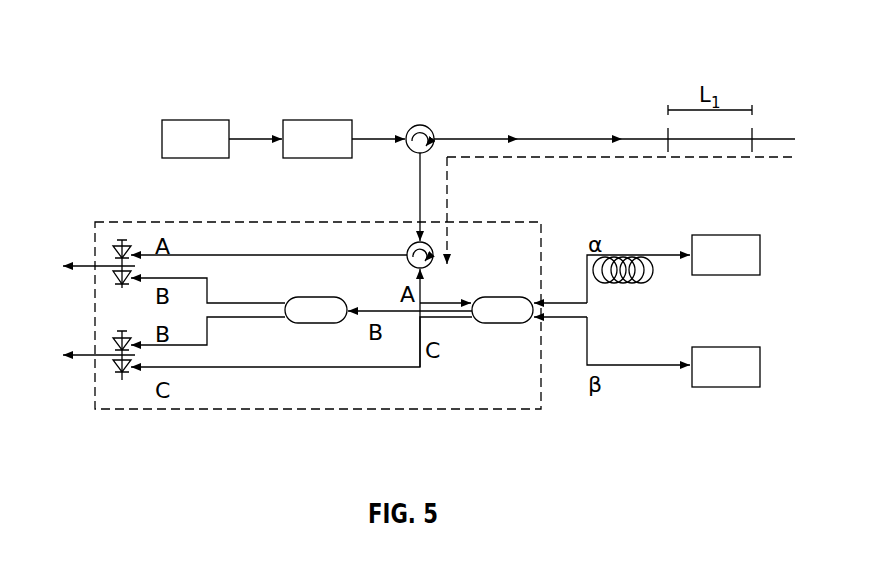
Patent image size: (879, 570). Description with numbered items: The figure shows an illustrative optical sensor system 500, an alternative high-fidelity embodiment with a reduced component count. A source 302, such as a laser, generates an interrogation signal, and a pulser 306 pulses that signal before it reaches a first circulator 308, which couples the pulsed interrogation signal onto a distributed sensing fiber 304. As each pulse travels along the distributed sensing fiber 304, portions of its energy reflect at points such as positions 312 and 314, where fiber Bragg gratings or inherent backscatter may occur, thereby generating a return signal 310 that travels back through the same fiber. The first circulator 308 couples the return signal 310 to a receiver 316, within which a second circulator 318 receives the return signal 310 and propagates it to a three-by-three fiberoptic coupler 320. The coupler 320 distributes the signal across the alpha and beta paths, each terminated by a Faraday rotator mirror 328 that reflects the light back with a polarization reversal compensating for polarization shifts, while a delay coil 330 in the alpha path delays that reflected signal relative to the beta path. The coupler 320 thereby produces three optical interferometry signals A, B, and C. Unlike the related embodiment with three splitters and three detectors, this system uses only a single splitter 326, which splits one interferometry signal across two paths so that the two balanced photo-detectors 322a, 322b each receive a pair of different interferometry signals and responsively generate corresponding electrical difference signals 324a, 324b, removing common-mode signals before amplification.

The optical sensor system 500 is at (120, 34).
The source 302 is at (195, 119).
The pulser 306 is at (317, 119).
The first circulator 308 is at (422, 124).
The distributed sensing fiber 304 is at (510, 137).
The position 312 is at (666, 130).
The position 314 is at (754, 130).
The return signal 310 is at (418, 193).
The receiver 316 is at (247, 221).
The second circulator 318 is at (434, 252).
The 3×3 fiberoptic coupler 320 is at (500, 324).
The splitter 326 is at (317, 296).
The first balanced photo-detector 322a is at (120, 243).
The second balanced photo-detector 322b is at (120, 378).
The first electrical difference signal 324a is at (76, 264).
The second electrical difference signal 324b is at (76, 358).
The Faraday rotator mirror 328 is at (724, 234).
The delay coil 330 is at (642, 282).